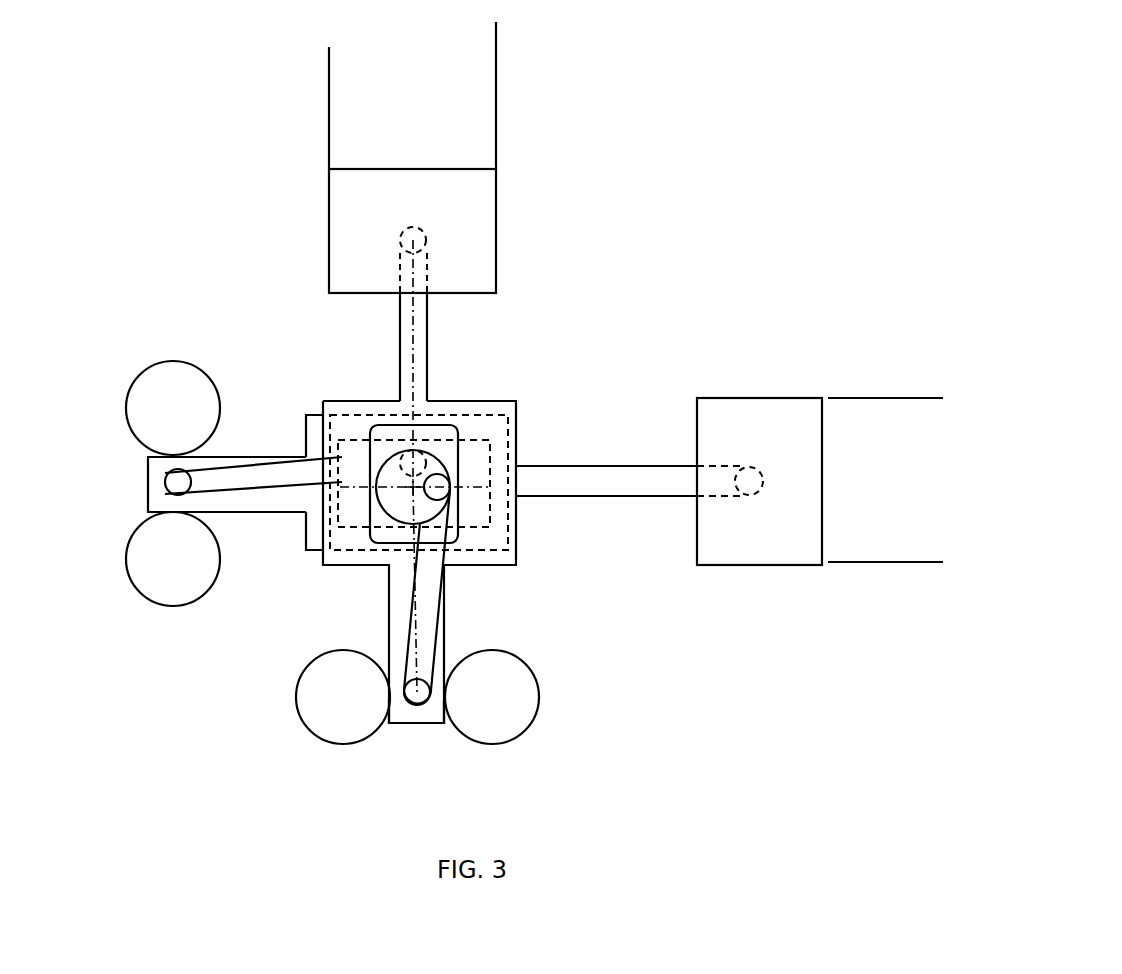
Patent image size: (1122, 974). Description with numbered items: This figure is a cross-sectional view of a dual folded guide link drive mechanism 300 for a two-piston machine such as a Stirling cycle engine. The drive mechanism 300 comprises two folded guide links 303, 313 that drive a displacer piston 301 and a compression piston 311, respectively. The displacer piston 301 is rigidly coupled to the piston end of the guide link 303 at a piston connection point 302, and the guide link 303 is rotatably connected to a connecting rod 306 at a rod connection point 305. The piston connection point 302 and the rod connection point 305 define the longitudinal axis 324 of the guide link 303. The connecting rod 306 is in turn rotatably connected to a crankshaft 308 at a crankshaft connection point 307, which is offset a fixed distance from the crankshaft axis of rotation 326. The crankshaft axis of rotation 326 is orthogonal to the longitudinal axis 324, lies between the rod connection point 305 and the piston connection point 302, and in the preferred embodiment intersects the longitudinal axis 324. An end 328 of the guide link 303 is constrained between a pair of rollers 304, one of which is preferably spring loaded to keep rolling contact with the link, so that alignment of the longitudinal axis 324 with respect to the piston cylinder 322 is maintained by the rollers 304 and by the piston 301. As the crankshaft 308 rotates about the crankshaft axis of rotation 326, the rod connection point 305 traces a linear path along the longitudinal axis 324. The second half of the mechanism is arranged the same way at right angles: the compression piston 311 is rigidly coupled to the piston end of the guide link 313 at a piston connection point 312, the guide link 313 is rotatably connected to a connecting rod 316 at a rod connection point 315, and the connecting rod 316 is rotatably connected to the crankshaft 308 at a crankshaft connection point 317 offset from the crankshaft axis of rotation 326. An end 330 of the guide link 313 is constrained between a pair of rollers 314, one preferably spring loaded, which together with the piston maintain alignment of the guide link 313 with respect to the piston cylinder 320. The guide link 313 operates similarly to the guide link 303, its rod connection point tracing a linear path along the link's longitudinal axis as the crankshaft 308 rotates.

The dual folded guide link drive mechanism 300 is at (118, 742).
The displacer piston 301 is at (329, 207).
The piston connection point 302 is at (425, 237).
The guide link 303 is at (428, 332).
The rollers 304 is at (323, 745).
The rod connection point 305 is at (423, 707).
The connecting rod 306 is at (437, 617).
The crankshaft connection point 307 is at (451, 487).
The crankshaft 308 is at (385, 508).
The compression piston 311 is at (765, 567).
The piston connection point 312 is at (750, 467).
The guide link 313 is at (615, 497).
The rollers 314 is at (168, 360).
The rod connection point 315 is at (165, 478).
The connecting rod 316 is at (286, 455).
The crankshaft connection point 317 is at (400, 465).
The piston cylinder 320 is at (890, 388).
The piston cylinder 322 is at (557, 82).
The longitudinal axis 324 is at (415, 373).
The crankshaft axis of rotation 326 is at (413, 487).
The end of guide link 328 is at (403, 714).
The end of guide link 330 is at (157, 502).